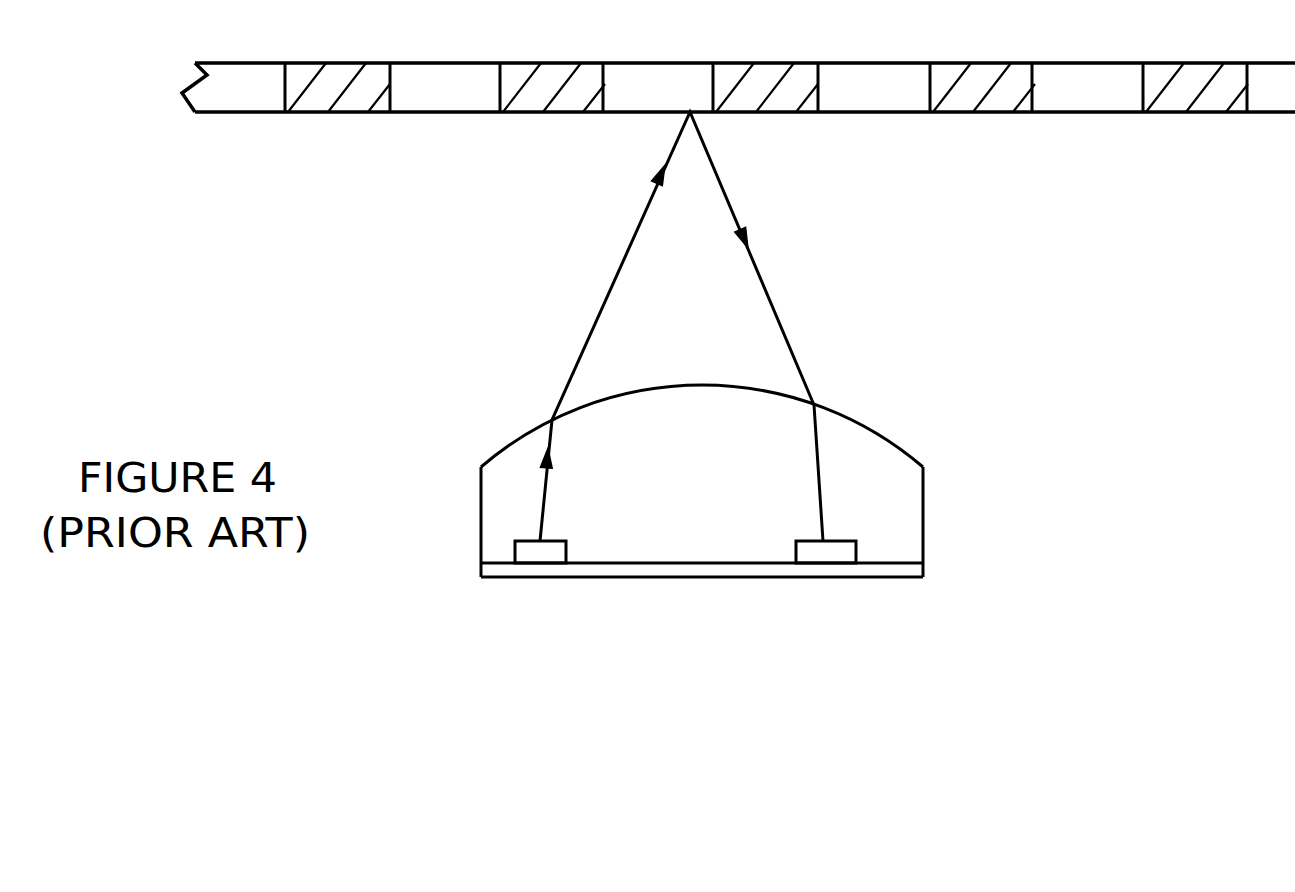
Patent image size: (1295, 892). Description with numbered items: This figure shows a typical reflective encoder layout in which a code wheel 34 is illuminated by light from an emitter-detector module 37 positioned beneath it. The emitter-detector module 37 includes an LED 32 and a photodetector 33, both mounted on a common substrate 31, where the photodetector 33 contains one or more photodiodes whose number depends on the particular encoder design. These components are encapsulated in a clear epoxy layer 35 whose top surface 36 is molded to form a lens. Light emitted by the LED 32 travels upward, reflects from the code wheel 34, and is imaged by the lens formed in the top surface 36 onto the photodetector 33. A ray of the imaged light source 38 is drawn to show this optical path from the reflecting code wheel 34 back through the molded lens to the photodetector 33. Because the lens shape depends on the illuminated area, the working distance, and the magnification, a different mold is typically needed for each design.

The substrate 31 is at (660, 568).
The LED 32 is at (540, 552).
The photodetector 33 is at (837, 552).
The code wheel 34 is at (1110, 92).
The clear epoxy layer 35 is at (923, 527).
The top surface 36 is at (885, 438).
The emitter-detector module 37 is at (699, 517).
The ray of the imaged light source 38 is at (607, 295).